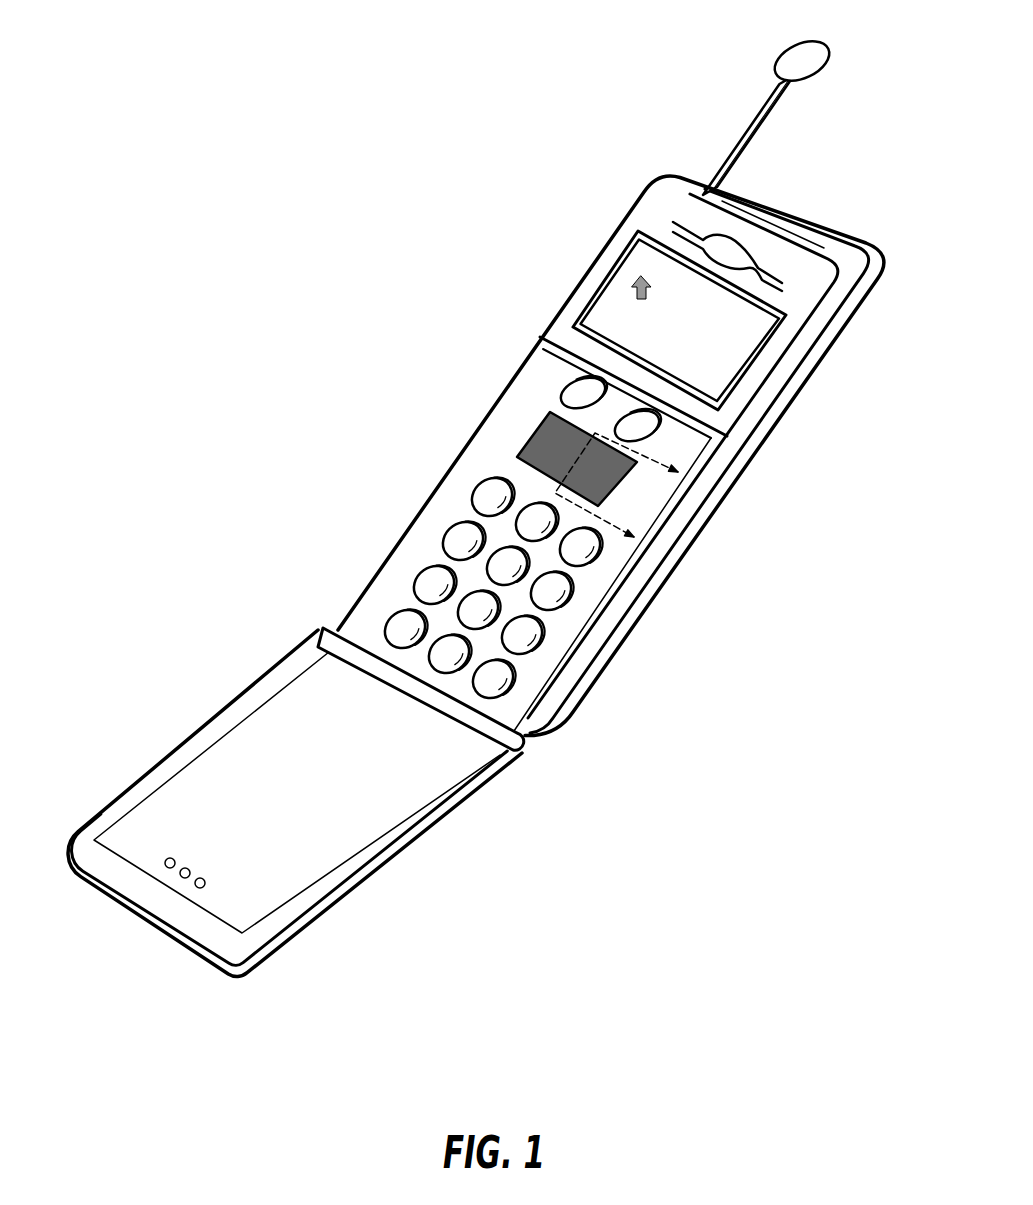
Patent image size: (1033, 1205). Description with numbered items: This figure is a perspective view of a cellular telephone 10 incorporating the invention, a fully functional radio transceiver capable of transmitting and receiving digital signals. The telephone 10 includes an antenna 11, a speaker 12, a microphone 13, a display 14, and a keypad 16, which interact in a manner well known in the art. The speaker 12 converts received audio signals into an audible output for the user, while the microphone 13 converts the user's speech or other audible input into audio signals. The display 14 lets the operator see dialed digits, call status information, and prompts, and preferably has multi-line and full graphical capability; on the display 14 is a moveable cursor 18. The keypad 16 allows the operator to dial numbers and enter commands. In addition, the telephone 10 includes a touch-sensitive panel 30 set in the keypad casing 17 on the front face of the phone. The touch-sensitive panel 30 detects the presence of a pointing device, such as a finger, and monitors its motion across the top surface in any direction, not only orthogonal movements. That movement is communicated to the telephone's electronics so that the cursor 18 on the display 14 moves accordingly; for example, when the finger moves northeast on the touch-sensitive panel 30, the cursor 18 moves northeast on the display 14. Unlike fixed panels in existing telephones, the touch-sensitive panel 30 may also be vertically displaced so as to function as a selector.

The cellular telephone 10 is at (611, 384).
The antenna 11 is at (765, 113).
The speaker 12 is at (747, 252).
The microphone 13 is at (185, 878).
The display 14 is at (723, 370).
The keypad 16 is at (572, 610).
The keypad casing 17 is at (488, 463).
The cursor 18 is at (627, 303).
The touch-sensitive panel 30 is at (555, 455).